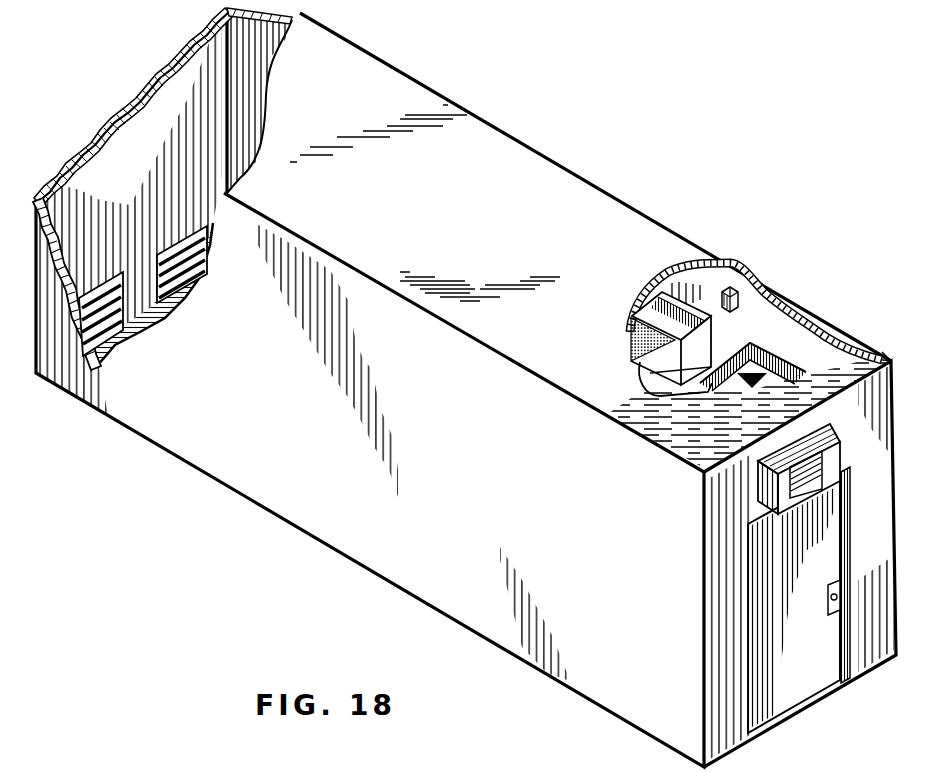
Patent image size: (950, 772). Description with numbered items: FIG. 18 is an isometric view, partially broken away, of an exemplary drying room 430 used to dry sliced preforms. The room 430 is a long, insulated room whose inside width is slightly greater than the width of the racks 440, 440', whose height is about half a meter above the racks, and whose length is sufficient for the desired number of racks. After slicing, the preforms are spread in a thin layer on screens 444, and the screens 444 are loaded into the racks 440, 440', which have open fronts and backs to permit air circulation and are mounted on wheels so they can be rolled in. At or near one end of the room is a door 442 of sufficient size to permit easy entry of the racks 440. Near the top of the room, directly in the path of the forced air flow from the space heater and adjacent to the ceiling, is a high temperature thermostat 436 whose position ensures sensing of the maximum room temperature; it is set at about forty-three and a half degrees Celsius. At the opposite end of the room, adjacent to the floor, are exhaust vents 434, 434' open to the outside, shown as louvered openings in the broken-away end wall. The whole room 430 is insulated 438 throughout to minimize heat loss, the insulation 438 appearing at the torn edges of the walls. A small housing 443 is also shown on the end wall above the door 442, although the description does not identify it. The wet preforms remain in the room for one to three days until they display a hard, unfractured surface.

The drying room 430 is at (346, 619).
The exhaust vent 434 is at (124, 288).
The exhaust vent 434' is at (180, 254).
The high temperature thermostat 436 is at (740, 266).
The insulation 438 is at (668, 283).
The rack 440 is at (692, 338).
The duct 440' is at (755, 358).
The door 442 is at (835, 644).
The vent 443 is at (816, 430).
The screen 444 is at (708, 388).